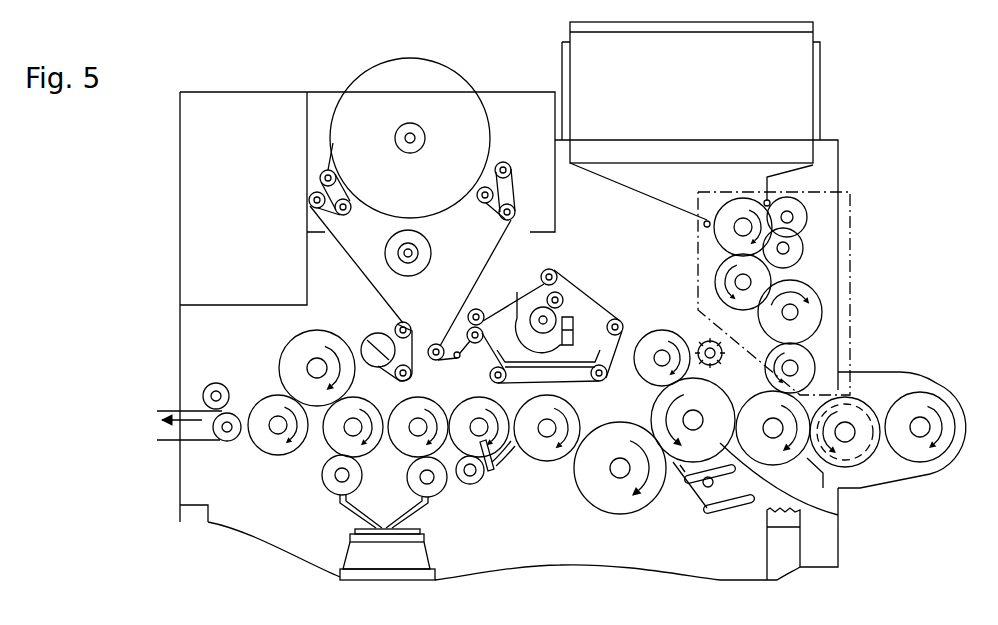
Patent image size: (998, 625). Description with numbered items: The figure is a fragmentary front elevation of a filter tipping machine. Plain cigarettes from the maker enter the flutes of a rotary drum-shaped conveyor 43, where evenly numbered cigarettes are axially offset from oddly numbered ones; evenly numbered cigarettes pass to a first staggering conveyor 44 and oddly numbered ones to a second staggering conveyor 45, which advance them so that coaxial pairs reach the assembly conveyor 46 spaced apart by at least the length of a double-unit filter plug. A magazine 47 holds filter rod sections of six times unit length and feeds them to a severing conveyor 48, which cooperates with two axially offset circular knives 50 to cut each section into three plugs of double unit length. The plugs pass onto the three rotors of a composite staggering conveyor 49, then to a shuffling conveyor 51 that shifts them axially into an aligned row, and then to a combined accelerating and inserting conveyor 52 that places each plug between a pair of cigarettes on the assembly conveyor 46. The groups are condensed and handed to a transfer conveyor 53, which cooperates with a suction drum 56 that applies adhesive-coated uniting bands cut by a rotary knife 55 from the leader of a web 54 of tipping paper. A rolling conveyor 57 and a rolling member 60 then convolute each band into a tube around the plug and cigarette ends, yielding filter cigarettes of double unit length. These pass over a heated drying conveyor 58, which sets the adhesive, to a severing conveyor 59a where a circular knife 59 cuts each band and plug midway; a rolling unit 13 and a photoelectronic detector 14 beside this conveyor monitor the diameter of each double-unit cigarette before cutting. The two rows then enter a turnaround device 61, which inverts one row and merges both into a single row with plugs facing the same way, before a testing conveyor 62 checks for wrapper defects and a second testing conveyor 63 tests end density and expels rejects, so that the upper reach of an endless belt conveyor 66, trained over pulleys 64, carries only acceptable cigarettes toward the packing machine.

The rolling unit 13 is at (507, 470).
The photoelectronic detector 14 is at (484, 478).
The rotary drum-shaped conveyor 43 is at (940, 410).
The first staggering conveyor 44 is at (856, 421).
The second staggering conveyor 45 is at (860, 400).
The assembly conveyor 46 is at (813, 467).
The magazine 47 is at (800, 90).
The severing conveyor 48 is at (742, 208).
The composite staggering conveyor 49 is at (762, 282).
The circular knives 50 is at (804, 248).
The shuffling conveyor 51 is at (813, 312).
The combined accelerating and inserting conveyor 52 is at (803, 362).
The transfer conveyor 53 is at (797, 443).
The web of tipping paper 54 is at (492, 258).
The rotary knife 55 is at (704, 342).
The suction drum 56 is at (671, 303).
The rolling conveyor 57 is at (607, 498).
The heated drying conveyor 58 is at (547, 452).
The circular knife 59 is at (472, 494).
The severing conveyor 59a is at (466, 406).
The rolling member 60 is at (722, 512).
The turnaround device 61 is at (330, 505).
The testing conveyor 62 is at (312, 344).
The second testing conveyor 63 is at (270, 405).
The pulleys 64 is at (231, 441).
The endless belt conveyor 66 is at (168, 410).